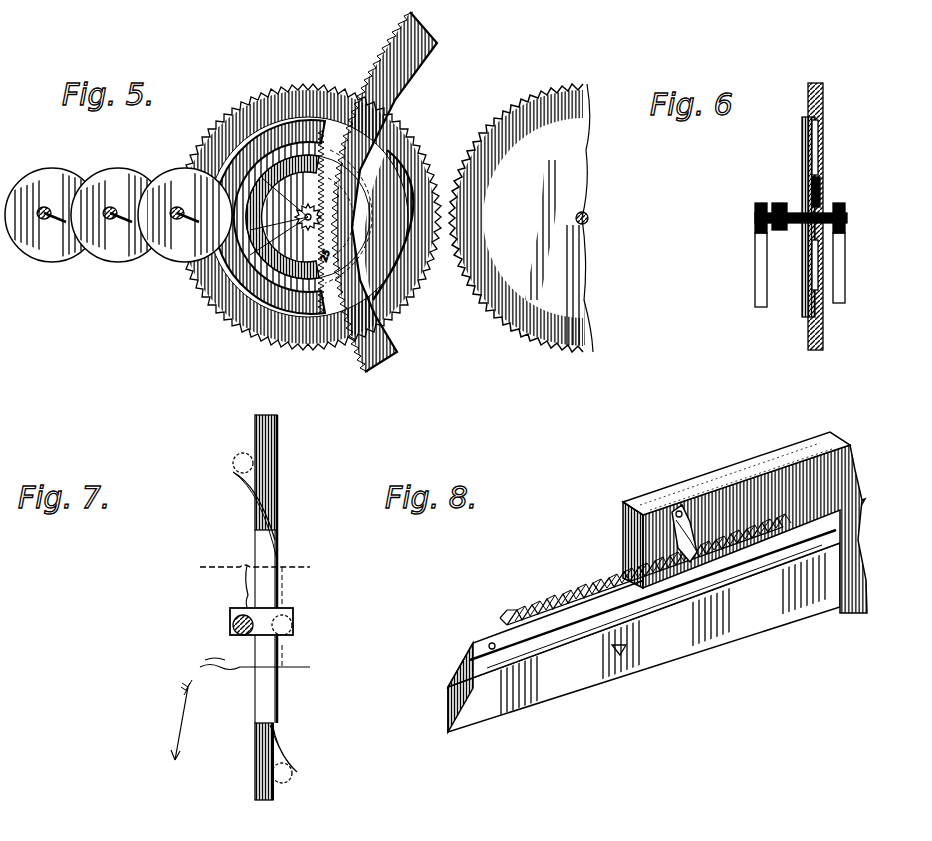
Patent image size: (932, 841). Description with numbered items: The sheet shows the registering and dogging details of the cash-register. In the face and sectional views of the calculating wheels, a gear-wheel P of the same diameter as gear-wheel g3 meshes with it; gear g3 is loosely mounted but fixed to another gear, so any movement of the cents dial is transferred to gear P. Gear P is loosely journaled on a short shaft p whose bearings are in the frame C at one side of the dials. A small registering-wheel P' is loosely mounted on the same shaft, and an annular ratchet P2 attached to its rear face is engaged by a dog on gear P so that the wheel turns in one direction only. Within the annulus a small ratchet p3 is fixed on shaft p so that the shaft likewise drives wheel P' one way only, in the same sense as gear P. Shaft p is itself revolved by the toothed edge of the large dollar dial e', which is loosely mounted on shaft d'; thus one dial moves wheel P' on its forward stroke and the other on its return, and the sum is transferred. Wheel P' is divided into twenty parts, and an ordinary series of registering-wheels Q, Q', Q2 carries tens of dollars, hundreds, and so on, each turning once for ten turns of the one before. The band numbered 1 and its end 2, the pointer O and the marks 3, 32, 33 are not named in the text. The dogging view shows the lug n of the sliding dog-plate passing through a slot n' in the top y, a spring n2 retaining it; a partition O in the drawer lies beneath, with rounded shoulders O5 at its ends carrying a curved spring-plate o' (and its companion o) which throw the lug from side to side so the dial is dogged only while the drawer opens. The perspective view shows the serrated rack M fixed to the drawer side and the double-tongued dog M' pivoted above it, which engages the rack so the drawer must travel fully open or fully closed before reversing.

In FIG. 5, the registering-wheel Q is at (185, 202).
In FIG. 5, the registering-wheel Q' is at (118, 202).
In FIG. 5, the registering-wheel Q2 is at (56, 170).
In FIG. 5, the gear-wheel P is at (308, 217).
In FIG. 6, the gear-wheel P is at (834, 216).
In FIG. 5, the registering-wheel P' is at (269, 213).
In FIG. 6, the registering-wheel P' is at (781, 217).
In FIG. 6, the annular ratchet P2 is at (818, 150).
In FIG. 5, the shaft p is at (270, 285).
In FIG. 6, the shaft p is at (755, 218).
In FIG. 5, the ratchet p3 is at (288, 98).
In FIG. 6, the ratchet p3 is at (824, 192).
In FIG. 5, the curved rack arm 1 is at (384, 192).
In FIG. 5, the rack arm end 2 is at (400, 41).
In FIG. 5, the large dial e' is at (421, 72).
In FIG. 5, the partition O is at (374, 225).
In FIG. 7, the partition O is at (278, 432).
In FIG. 5, the spoke 3 is at (237, 238).
In FIG. 5, the spoke 32 is at (280, 128).
In FIG. 5, the spoke 33 is at (286, 199).
In FIG. 5, the gear-wheel g3 is at (532, 218).
In FIG. 5, the shaft d' is at (595, 206).
In FIG. 6, the frame C is at (757, 262).
In FIG. 7, the depending lug n is at (261, 618).
In FIG. 7, the slot n' is at (214, 644).
In FIG. 7, the spring n2 is at (294, 638).
In FIG. 7, the rod o is at (266, 616).
In FIG. 7, the curved spring-plate o' is at (262, 622).
In FIG. 7, the shoulder O5 is at (276, 520).
In FIG. 7, the top y is at (230, 572).
In FIG. 8, the top y is at (742, 468).
In FIG. 8, the serrated rack M is at (645, 569).
In FIG. 8, the double-tongued dog M' is at (711, 531).